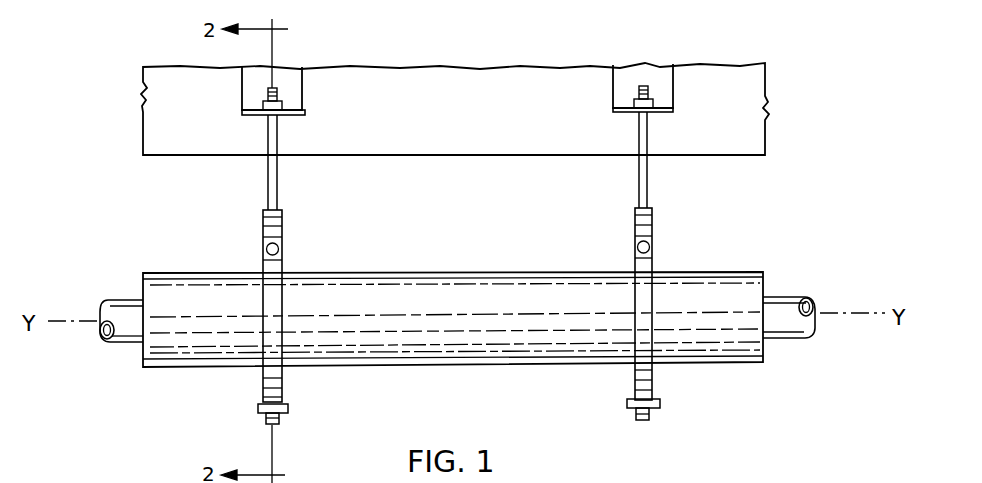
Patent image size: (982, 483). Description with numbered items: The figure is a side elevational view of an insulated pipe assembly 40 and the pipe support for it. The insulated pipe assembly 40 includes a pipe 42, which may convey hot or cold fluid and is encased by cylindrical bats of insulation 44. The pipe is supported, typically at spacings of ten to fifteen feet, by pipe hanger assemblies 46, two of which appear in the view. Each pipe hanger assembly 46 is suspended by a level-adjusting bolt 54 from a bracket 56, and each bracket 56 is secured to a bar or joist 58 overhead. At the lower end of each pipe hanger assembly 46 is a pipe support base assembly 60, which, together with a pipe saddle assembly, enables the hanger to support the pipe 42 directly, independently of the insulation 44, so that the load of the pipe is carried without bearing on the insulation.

The insulated pipe assembly 40 is at (790, 180).
The pipe 42 is at (795, 300).
The insulation 44 is at (700, 300).
The pipe hanger assembly 46 is at (292, 260).
The level-adjusting bolt 54 is at (278, 180).
The bracket 56 is at (305, 113).
The bar or joist 58 is at (460, 138).
The pipe support base assembly 60 is at (250, 405).